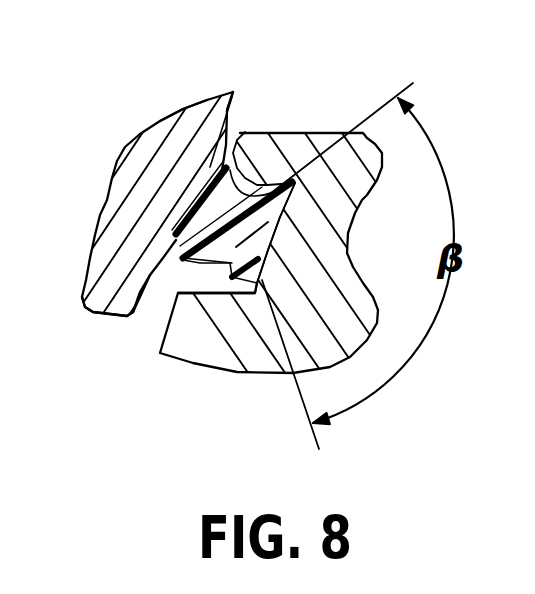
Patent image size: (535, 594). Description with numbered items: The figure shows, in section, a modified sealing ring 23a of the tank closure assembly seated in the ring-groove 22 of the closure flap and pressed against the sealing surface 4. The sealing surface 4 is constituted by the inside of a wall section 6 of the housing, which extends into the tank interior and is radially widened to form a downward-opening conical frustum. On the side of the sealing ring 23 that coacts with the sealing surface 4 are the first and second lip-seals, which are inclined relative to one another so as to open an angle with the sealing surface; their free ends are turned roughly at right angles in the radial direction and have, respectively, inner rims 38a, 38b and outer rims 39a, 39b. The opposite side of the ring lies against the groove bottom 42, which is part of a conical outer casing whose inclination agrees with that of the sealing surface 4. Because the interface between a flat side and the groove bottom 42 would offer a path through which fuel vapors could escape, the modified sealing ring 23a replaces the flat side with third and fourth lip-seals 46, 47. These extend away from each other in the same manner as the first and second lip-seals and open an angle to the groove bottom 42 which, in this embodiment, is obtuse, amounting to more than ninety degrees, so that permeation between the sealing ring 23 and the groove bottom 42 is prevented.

The sealing surface 4 is at (141, 291).
The wall section 6 is at (170, 152).
The ring-groove 22 is at (232, 291).
The sealing ring 23 is at (196, 184).
The sealing ring 23a is at (200, 112).
The inner rim 38a is at (210, 190).
The inner rim 38b is at (193, 258).
The outer rim 39a is at (233, 95).
The outer rim 39b is at (180, 262).
The groove bottom 42 is at (267, 226).
The third lip-seal 46 is at (270, 130).
The fourth lip-seal 47 is at (267, 276).